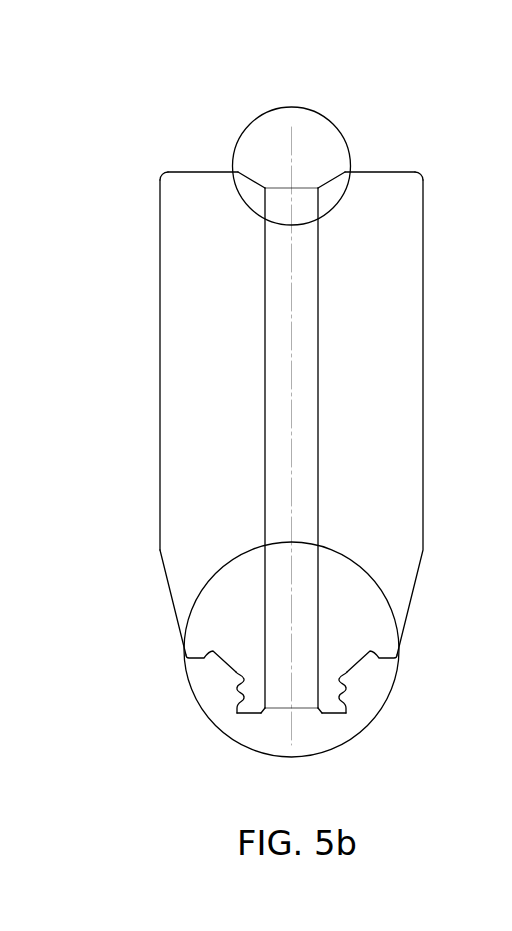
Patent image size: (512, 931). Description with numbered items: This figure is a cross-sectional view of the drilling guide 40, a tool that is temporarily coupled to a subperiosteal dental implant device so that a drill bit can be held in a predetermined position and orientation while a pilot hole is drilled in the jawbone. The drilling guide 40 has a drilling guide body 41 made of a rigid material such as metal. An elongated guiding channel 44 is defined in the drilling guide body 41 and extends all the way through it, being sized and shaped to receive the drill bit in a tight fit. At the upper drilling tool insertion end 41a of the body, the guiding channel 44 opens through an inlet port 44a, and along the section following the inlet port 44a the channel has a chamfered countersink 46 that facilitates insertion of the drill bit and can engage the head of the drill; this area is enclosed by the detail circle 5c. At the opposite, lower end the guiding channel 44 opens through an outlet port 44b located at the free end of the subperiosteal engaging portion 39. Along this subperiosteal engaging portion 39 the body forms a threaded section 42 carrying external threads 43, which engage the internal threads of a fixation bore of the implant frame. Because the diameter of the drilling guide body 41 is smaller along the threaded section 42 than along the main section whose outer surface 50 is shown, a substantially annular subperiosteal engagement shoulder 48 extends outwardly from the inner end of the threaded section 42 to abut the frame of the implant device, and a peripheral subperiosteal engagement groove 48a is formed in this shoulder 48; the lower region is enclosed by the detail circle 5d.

The drilling guide 40 is at (140, 229).
The drilling guide body 41 is at (400, 428).
The drilling tool insertion end 41a is at (393, 172).
The outer surface 50 is at (424, 378).
The guiding channel 44 is at (298, 262).
The inlet port 44a is at (264, 170).
The countersink 46 is at (332, 170).
The subperiosteal engagement shoulder 48 is at (205, 669).
The peripheral subperiosteal engagement groove 48a is at (376, 659).
The threaded section 42 is at (367, 688).
The external threads 43 is at (240, 698).
The subperiosteal engaging portion 39 is at (358, 698).
The outlet port 44b is at (312, 723).
The detail circle FIG. 5c is at (300, 107).
The detail circle FIG. 5d is at (233, 743).